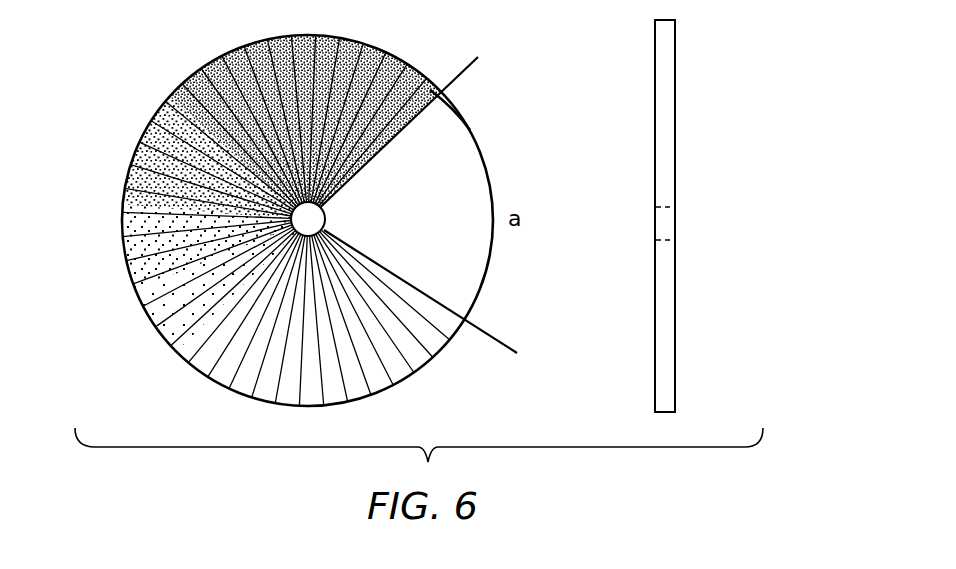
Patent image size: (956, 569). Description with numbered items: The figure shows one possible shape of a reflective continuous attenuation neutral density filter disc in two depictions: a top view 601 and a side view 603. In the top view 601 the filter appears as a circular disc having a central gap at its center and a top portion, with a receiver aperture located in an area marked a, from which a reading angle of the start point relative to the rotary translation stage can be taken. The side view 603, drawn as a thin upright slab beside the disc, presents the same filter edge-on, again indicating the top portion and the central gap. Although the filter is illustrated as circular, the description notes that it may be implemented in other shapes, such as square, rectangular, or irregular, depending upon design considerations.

The top view 601 is at (201, 374).
The side view 603 is at (699, 243).